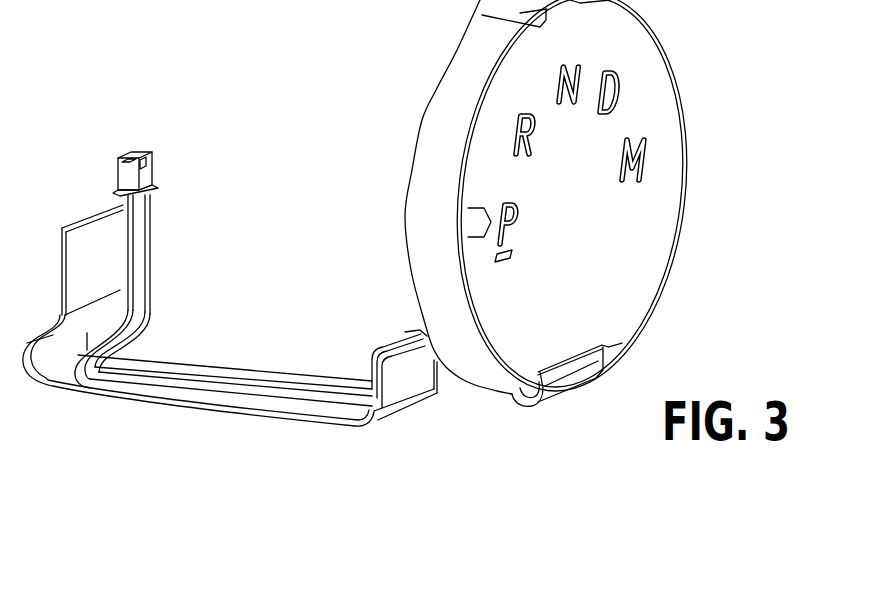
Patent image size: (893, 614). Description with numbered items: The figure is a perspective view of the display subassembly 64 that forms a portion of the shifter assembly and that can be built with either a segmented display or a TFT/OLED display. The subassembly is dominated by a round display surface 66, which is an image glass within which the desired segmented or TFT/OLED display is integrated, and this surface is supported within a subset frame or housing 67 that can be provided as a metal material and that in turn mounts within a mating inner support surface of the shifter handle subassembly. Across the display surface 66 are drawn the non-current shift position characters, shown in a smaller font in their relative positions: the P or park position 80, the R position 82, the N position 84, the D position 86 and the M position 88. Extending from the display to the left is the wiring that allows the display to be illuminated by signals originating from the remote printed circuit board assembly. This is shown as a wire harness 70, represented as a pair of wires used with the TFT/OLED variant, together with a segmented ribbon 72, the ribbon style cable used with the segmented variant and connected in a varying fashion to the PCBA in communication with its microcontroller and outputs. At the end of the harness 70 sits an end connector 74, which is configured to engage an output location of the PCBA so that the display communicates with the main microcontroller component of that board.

The display subassembly 64 is at (311, 285).
The display surface 66 is at (645, 232).
The subset frame or housing 67 is at (471, 57).
The wire harness 70 is at (150, 270).
The segmented ribbon 72 is at (160, 368).
The end connector 74 is at (154, 173).
The P position character 80 is at (503, 198).
The R position character 82 is at (515, 127).
The N position character 84 is at (580, 68).
The D position character 86 is at (621, 83).
The M position character 88 is at (644, 159).